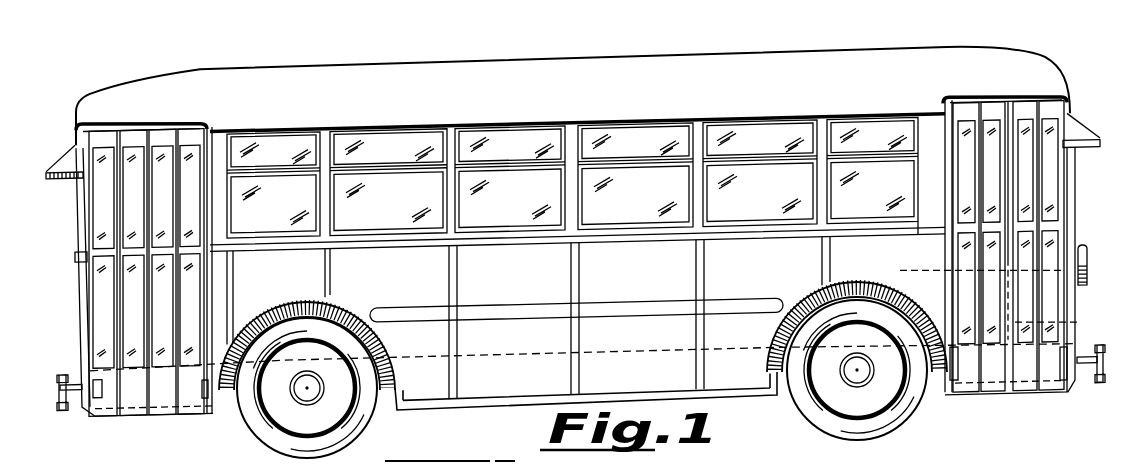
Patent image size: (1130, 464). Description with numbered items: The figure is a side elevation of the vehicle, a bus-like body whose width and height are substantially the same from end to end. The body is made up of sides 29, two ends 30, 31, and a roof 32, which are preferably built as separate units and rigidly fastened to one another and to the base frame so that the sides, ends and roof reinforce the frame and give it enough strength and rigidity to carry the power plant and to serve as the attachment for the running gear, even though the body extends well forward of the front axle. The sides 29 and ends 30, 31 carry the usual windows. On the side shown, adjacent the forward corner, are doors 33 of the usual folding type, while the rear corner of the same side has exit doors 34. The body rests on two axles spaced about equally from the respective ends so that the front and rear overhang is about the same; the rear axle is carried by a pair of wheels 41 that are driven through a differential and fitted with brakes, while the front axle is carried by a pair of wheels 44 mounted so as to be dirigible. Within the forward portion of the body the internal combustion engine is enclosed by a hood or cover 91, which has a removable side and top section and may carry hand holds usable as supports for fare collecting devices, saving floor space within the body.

The sides 29 is at (503, 392).
The end 30 is at (84, 270).
The end 31 is at (1010, 265).
The roof 32 is at (1018, 70).
The doors 33 is at (960, 113).
The exit doors 34 is at (188, 137).
The wheels 41 is at (263, 432).
The wheels 44 is at (907, 405).
The hood or cover 91 is at (862, 345).